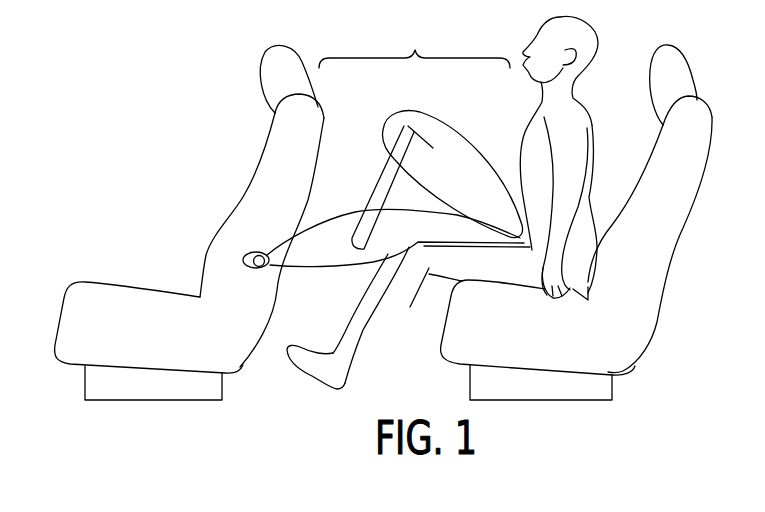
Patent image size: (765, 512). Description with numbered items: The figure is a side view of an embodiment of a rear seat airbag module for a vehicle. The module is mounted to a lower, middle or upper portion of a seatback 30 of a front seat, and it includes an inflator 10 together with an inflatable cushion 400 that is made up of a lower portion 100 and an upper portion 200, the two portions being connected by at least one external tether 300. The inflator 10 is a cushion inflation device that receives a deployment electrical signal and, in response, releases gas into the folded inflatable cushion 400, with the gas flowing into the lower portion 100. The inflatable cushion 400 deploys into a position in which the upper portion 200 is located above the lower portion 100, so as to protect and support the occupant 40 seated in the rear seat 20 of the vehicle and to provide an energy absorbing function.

The inflator 10 is at (256, 259).
The rear seat 20 is at (563, 352).
The seatback 30 is at (310, 122).
The occupant 40 is at (577, 117).
The lower portion 100 is at (323, 244).
The upper portion 200 is at (445, 140).
The external tether 300 is at (384, 188).
The inflatable cushion 400 is at (421, 131).